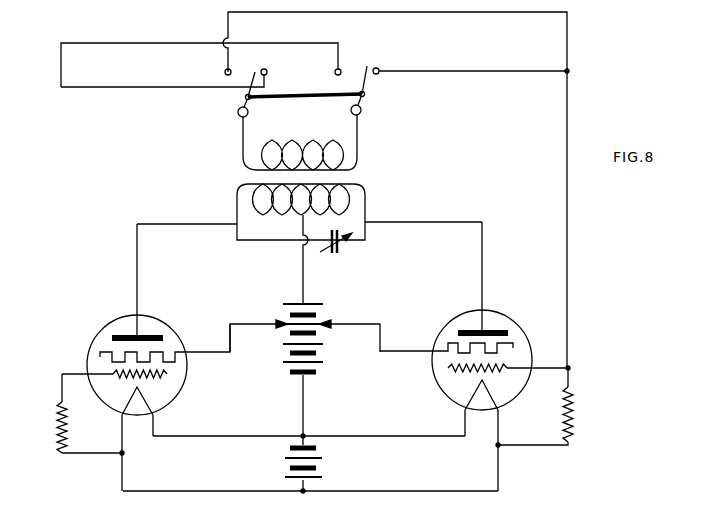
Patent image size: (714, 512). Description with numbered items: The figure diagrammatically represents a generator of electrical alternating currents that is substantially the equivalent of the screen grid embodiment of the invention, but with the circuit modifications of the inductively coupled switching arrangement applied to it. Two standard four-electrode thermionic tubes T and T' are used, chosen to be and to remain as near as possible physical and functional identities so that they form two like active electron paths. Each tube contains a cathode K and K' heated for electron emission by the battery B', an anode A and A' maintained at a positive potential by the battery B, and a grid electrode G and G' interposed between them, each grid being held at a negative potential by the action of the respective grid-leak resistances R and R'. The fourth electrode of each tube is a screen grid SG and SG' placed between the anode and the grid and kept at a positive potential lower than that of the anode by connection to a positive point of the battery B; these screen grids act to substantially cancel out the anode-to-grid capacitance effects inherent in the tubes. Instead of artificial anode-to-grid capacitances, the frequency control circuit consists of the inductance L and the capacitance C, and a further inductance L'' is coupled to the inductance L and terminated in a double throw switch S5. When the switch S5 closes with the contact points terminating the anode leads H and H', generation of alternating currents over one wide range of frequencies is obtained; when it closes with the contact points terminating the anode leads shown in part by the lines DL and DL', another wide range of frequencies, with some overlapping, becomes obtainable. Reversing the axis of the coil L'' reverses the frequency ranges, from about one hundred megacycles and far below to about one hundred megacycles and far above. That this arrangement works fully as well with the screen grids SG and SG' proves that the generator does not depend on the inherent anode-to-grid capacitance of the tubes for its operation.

The anode lead H is at (395, 190).
The anode lead H' is at (201, 52).
The anode lead line DL is at (471, 59).
The anode lead line DL' is at (164, 72).
The double throw switch S5 is at (305, 97).
The inductance L'' is at (315, 142).
The inductance L is at (309, 244).
The capacitance C is at (343, 250).
The battery B is at (305, 370).
The battery B' is at (310, 463).
The thermionic tube T is at (485, 353).
The thermionic tube T' is at (136, 360).
The anode A is at (475, 277).
The anode A' is at (140, 281).
The screen grid SG is at (446, 336).
The screen grid SG' is at (165, 339).
The grid electrode G is at (490, 368).
The grid electrode G' is at (138, 375).
The cathode K is at (468, 435).
The cathode K' is at (120, 439).
The grid-leak resistance R is at (551, 406).
The grid-leak resistance R' is at (75, 414).